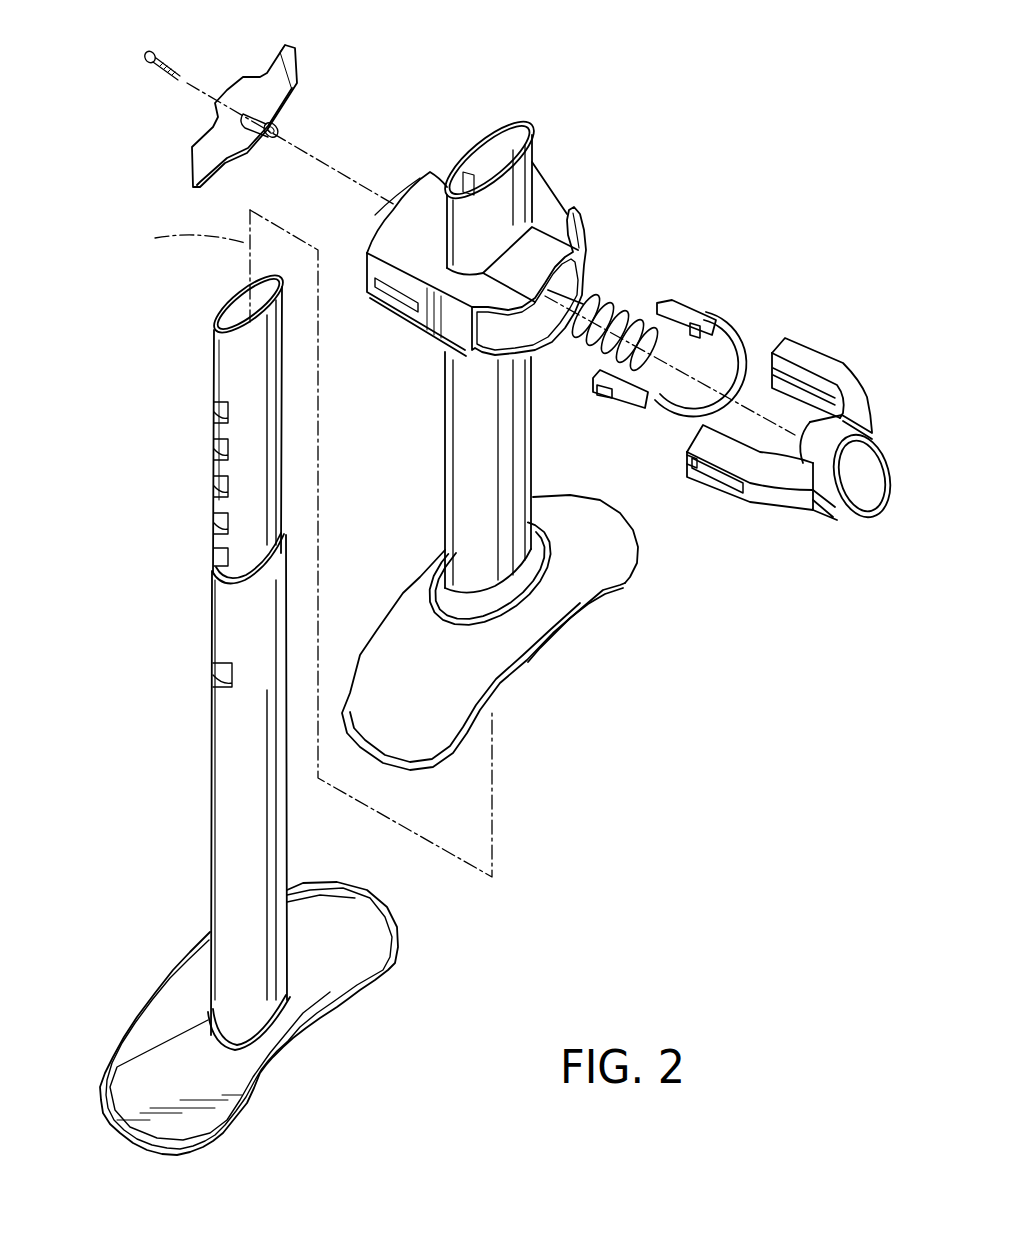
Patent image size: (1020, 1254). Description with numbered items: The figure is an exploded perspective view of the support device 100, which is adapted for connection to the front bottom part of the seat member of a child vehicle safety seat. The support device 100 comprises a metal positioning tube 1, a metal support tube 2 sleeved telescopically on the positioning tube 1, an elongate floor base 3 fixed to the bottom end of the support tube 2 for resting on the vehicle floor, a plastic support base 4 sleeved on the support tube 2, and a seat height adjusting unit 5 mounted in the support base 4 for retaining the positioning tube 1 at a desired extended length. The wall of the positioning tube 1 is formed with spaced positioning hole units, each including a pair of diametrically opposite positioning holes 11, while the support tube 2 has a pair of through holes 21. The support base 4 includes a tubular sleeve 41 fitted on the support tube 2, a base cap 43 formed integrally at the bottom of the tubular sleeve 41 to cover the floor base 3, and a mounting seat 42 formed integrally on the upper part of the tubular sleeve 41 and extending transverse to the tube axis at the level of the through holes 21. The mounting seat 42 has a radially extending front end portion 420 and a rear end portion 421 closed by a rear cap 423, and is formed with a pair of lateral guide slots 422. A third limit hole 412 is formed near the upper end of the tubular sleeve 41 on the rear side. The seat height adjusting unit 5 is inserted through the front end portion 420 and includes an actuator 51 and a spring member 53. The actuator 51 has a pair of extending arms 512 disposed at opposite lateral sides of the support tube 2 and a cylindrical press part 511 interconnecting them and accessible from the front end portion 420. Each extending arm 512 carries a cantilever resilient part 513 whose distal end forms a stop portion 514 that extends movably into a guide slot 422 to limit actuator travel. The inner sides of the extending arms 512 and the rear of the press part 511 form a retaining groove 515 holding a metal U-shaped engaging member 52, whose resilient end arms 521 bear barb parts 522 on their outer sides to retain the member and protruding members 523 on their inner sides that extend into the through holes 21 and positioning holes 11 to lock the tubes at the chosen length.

The support device 100 is at (380, 88).
The positioning tube 1 is at (193, 367).
The positioning holes 11 is at (217, 420).
The support tube 2 is at (168, 703).
The through holes 21 is at (213, 670).
The floor base 3 is at (190, 1062).
The support base 4 is at (445, 435).
The tubular sleeve 41 is at (462, 478).
The third limit hole 412 is at (465, 158).
The mounting seat 42 is at (548, 215).
The front end portion 420 is at (590, 243).
The rear end portion 421 is at (393, 247).
The lateral guide slots 422 is at (407, 313).
The rear cap 423 is at (205, 127).
The base cap 43 is at (468, 692).
The seat height adjusting unit 5 is at (820, 250).
The actuator 51 is at (877, 380).
The cylindrical press part 511 is at (850, 493).
The extending arms 512 is at (843, 380).
The resilient part 513 is at (720, 470).
The stop portion 514 is at (687, 455).
The retaining groove 515 is at (757, 353).
The U-shaped engaging member 52 is at (710, 318).
The resilient end arms 521 is at (717, 333).
The barb parts 522 is at (693, 317).
The protruding members 523 is at (673, 317).
The spring member 53 is at (603, 297).